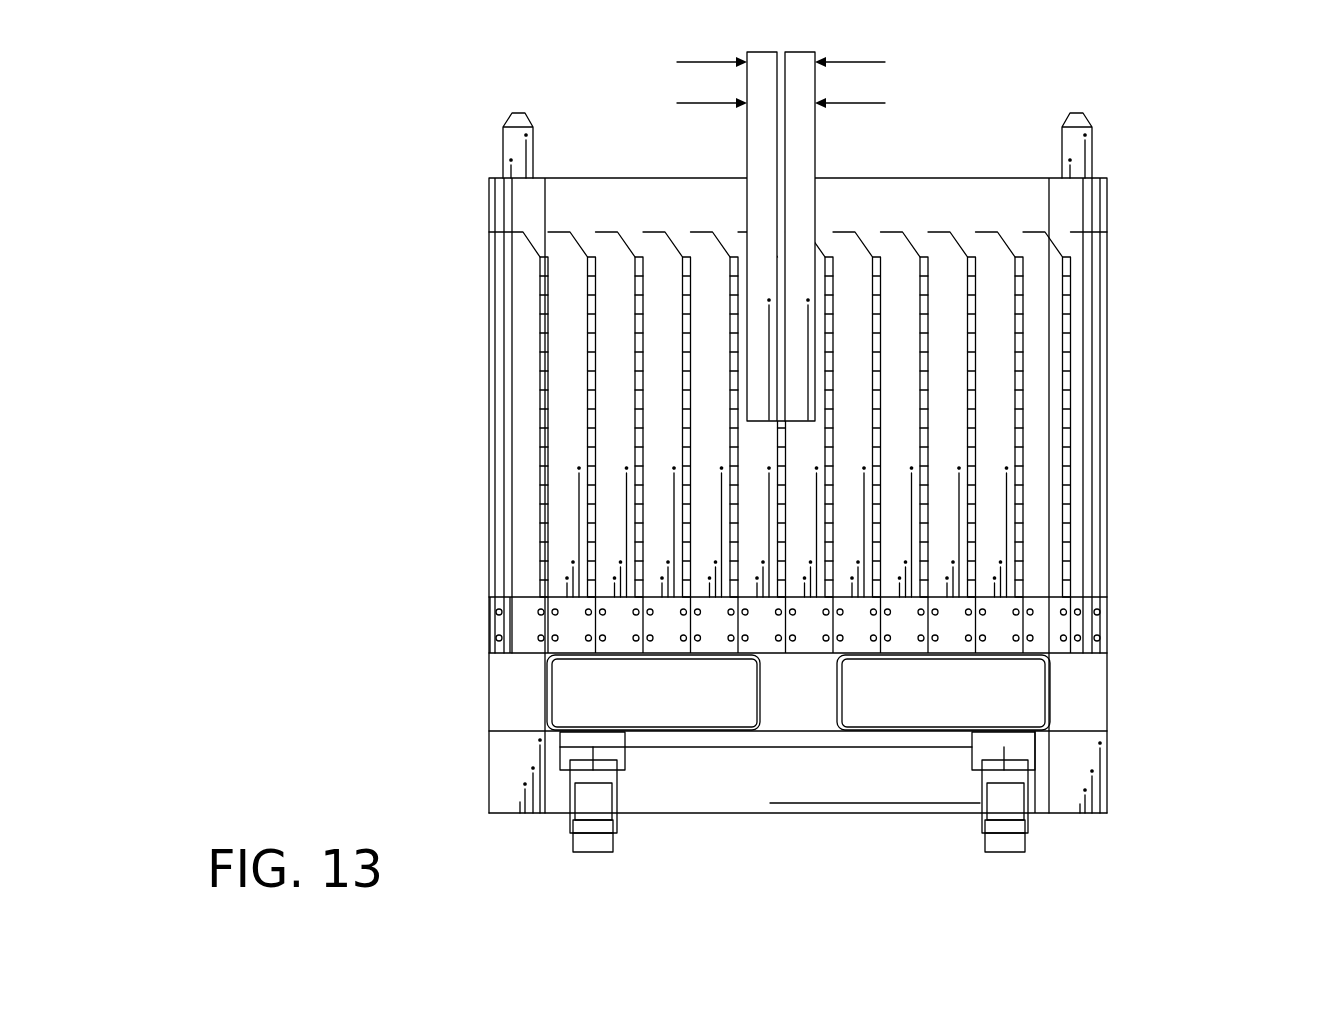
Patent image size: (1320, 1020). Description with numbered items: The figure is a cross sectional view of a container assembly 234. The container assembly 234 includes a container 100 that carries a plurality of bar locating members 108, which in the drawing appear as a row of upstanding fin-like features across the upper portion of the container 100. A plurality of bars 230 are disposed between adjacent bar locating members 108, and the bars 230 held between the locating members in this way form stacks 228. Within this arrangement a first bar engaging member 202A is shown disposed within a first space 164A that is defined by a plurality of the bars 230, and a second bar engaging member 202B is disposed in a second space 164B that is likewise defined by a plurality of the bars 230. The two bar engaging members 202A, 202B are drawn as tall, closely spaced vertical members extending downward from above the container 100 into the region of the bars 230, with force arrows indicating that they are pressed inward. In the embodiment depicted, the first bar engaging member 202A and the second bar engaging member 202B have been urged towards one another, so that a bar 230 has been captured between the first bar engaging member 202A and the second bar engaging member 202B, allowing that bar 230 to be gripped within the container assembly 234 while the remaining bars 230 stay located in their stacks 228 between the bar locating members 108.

The container 100 is at (1108, 332).
The bar locating member 108 is at (609, 231).
The first space 164A is at (757, 502).
The second space 164B is at (803, 510).
The first bar engaging member 202A is at (760, 136).
The second bar engaging member 202B is at (945, 164).
The stack 228 is at (1010, 222).
The bar 230 is at (637, 257).
The container assembly 234 is at (1203, 715).